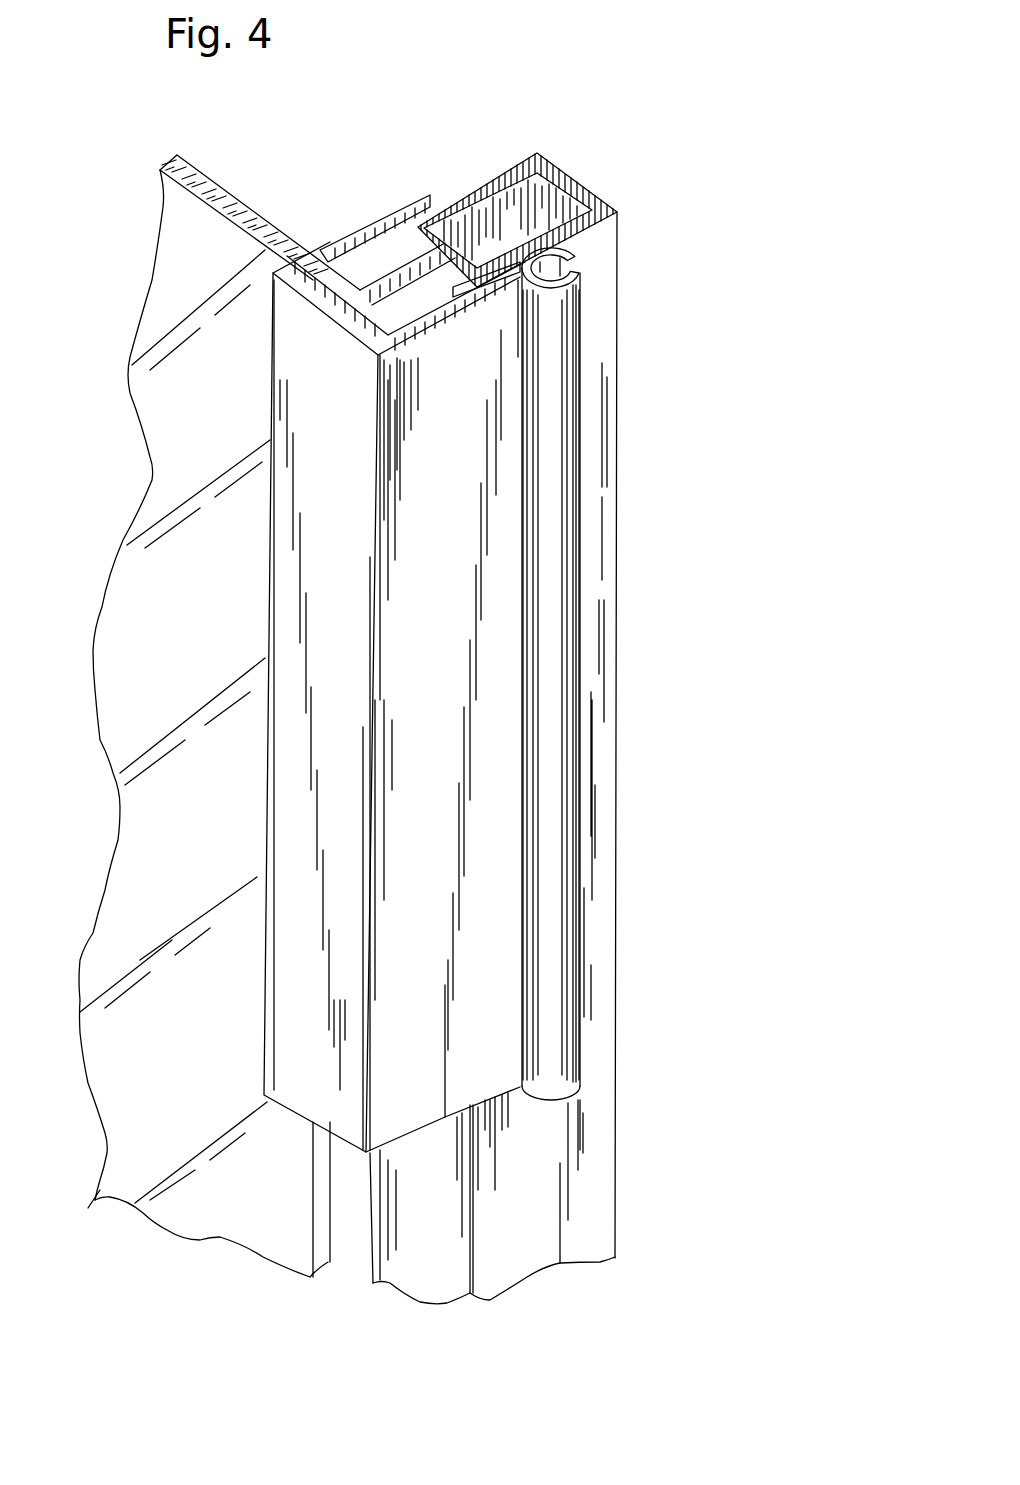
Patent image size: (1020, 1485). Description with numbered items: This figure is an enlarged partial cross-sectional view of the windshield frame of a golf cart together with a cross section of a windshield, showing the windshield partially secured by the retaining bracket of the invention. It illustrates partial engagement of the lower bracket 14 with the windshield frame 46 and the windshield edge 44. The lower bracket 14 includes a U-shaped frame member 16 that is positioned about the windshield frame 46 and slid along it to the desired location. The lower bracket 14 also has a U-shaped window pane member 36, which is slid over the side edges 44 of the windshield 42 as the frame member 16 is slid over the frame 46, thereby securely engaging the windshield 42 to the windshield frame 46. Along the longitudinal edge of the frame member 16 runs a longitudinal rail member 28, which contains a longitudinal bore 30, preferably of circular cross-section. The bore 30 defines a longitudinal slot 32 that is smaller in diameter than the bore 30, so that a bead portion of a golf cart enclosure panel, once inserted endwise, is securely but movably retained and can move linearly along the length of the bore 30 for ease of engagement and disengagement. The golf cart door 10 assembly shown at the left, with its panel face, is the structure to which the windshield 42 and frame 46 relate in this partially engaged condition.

The door 10 is at (270, 577).
The lower bracket 14 is at (270, 648).
The U-shaped frame member 16 is at (380, 240).
The longitudinal rail member 28 is at (557, 488).
The longitudinal bore 30 is at (552, 263).
The longitudinal slot 32 is at (570, 252).
The U-shaped window pane member 36 is at (355, 318).
The windshield 42 is at (213, 173).
The windshield edge 44 is at (318, 1222).
The windshield frame 46 is at (620, 320).